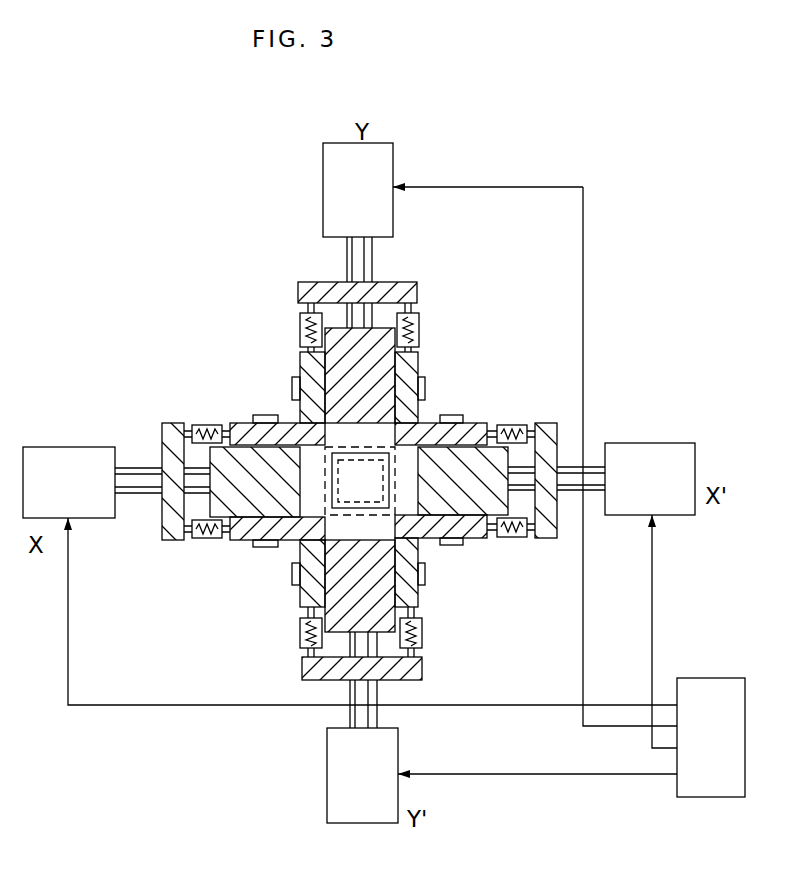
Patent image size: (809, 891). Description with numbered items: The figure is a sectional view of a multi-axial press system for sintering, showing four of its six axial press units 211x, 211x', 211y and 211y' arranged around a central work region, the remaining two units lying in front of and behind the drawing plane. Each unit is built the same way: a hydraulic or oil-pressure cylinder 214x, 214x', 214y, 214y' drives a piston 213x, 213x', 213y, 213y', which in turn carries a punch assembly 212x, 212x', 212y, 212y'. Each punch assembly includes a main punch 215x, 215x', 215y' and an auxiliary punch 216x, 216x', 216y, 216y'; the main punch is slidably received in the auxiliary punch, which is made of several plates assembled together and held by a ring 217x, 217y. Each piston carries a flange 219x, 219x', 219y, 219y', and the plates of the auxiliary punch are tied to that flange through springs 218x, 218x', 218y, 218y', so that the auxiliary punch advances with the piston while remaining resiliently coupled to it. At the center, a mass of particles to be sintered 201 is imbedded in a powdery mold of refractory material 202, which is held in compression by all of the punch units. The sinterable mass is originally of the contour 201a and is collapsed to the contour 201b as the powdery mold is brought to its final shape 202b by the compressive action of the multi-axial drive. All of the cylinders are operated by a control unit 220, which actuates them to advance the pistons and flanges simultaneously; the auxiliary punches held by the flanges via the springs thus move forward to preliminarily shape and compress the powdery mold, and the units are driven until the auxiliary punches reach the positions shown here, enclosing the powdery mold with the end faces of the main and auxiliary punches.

The hydraulic cylinder 214y is at (319, 190).
The axial press unit 211y is at (284, 223).
The piston 213y is at (407, 268).
The flange 219y is at (424, 272).
The punch assembly 212y is at (312, 281).
The spring 218y is at (450, 319).
The main punch 215y' is at (272, 478).
The ring 217y is at (293, 385).
The ring 217x is at (262, 413).
The auxiliary punch 216y is at (403, 372).
The auxiliary punch 216x' is at (453, 444).
The punch assembly 212x' is at (547, 348).
The main punch 215x' is at (523, 412).
The flange 219x' is at (594, 458).
The piston 213x' is at (586, 451).
The hydraulic cylinder 214x' is at (668, 454).
The powdery mold of refractory material 202 is at (387, 433).
The mass of particles to be sintered 201 is at (347, 497).
The final shape of powdery mold 202b is at (325, 480).
The collapsed contour of sinterable mass 201b is at (395, 475).
The punch assembly 212x is at (109, 370).
The auxiliary punch 216x is at (233, 479).
The spring 218x is at (185, 409).
The axial press unit 211x is at (72, 384).
The hydraulic cylinder 214x is at (69, 464).
The piston 213x is at (146, 513).
The flange 219x is at (144, 510).
The main punch 215x is at (199, 554).
The original contour of sinterable mass 201a is at (418, 522).
The spring 218x' is at (525, 562).
The axial press unit 211x' is at (622, 547).
The auxiliary punch 216y' is at (403, 582).
The spring 218y' is at (461, 633).
The punch assembly 212y' is at (313, 676).
The flange 219y' is at (442, 676).
The piston 213y' is at (318, 687).
The hydraulic cylinder 214y' is at (321, 775).
The axial press unit 211y' is at (444, 746).
The control unit 220 is at (678, 783).